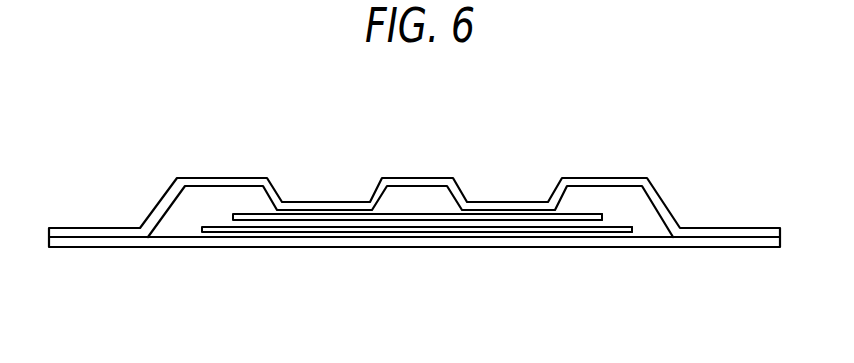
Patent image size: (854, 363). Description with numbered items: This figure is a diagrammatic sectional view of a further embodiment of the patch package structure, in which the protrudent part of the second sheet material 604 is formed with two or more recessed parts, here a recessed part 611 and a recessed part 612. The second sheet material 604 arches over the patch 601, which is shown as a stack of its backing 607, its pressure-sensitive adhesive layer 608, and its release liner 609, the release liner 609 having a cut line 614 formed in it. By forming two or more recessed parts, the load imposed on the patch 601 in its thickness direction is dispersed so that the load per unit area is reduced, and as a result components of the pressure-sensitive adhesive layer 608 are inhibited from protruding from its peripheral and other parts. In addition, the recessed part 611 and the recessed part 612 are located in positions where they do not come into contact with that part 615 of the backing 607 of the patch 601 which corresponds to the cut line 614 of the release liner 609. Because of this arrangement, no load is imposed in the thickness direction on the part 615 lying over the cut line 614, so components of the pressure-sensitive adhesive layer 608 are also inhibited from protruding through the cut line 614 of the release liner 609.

The patch 601 is at (194, 214).
The second sheet material 604 is at (175, 178).
The backing 607 is at (601, 220).
The pressure-sensitive adhesive layer 608 is at (603, 227).
The release liner 609 is at (640, 237).
The recessed part 611 is at (385, 142).
The recessed part 612 is at (565, 142).
The cut line 614 is at (407, 230).
The part of the backing corresponding to the cut line 615 is at (405, 213).